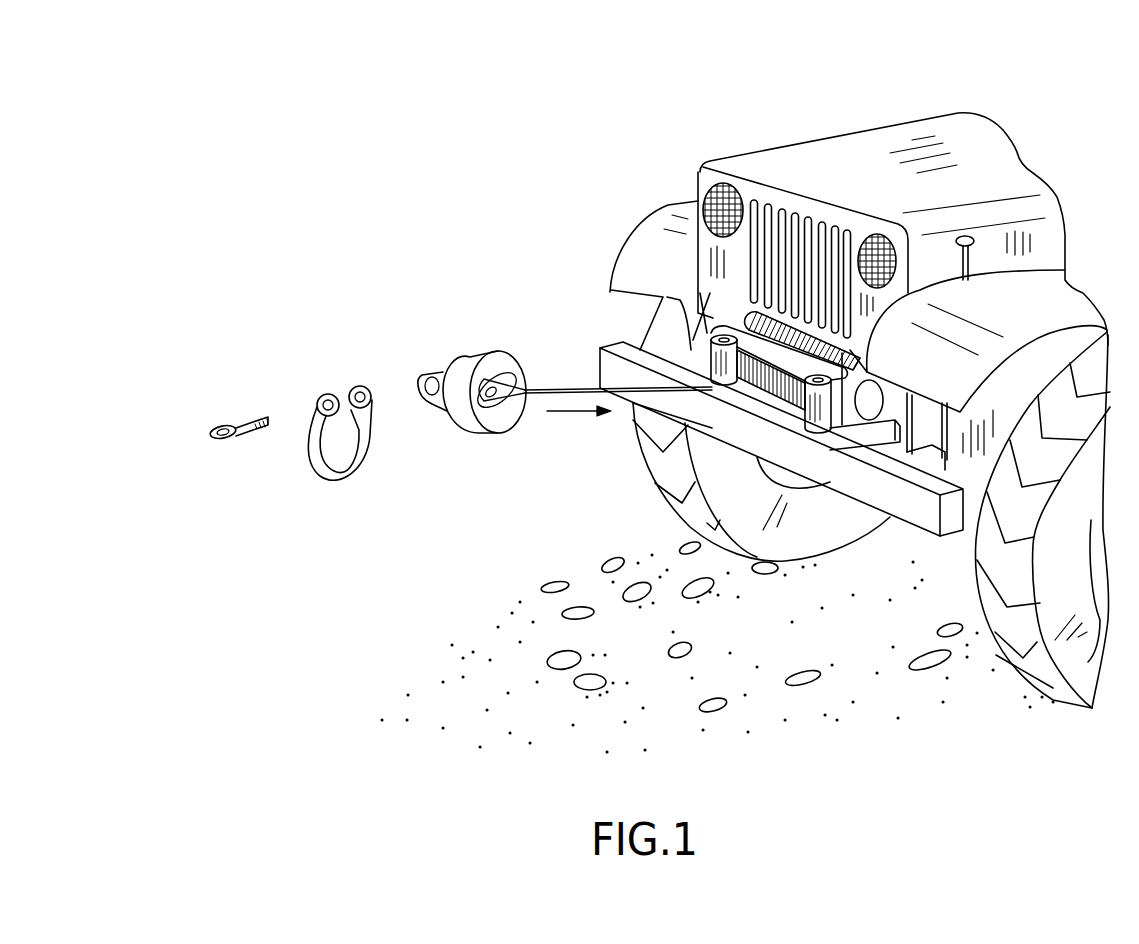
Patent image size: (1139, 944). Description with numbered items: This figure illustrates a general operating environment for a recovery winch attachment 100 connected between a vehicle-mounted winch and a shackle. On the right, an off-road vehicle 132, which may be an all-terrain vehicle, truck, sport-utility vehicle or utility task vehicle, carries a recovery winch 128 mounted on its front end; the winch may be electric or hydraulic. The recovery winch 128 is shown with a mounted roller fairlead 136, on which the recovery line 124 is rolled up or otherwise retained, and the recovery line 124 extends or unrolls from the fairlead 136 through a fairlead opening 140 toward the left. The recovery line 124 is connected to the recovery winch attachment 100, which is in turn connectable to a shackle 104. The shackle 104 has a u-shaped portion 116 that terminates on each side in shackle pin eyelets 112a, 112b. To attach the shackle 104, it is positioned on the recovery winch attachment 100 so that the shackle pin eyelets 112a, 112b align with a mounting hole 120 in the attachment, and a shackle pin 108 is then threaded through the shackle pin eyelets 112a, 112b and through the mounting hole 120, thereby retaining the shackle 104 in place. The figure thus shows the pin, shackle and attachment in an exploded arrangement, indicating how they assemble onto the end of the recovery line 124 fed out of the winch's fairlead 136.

The recovery winch attachment 100 is at (340, 380).
The shackle 104 is at (313, 467).
The shackle pin 108 is at (310, 407).
The shackle pin eyelet 112a is at (319, 400).
The shackle pin eyelet 112b is at (372, 408).
The u-shaped portion 116 is at (341, 497).
The mounting hole 120 is at (437, 410).
The recovery line 124 is at (567, 388).
The recovery winch 128 is at (710, 332).
The off-road vehicle 132 is at (833, 152).
The fairlead 136 is at (810, 412).
The fairlead opening 140 is at (747, 373).